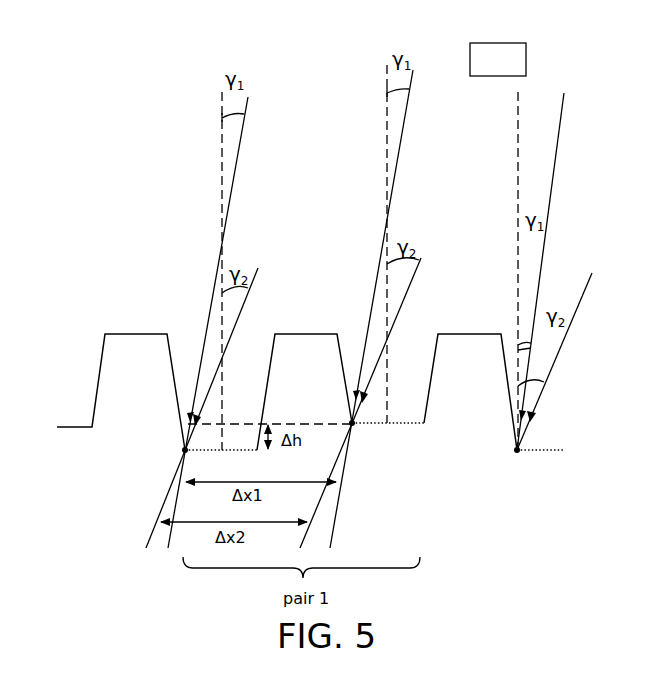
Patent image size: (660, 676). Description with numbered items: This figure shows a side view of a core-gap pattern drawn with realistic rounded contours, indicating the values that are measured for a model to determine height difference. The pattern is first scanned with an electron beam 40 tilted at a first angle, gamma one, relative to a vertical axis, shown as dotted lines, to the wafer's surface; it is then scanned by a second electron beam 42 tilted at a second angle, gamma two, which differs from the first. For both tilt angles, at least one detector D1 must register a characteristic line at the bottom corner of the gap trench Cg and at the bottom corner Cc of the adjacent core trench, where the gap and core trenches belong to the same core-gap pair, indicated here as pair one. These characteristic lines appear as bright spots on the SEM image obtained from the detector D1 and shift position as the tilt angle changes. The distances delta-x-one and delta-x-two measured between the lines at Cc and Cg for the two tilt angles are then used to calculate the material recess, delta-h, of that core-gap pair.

The electron beam 40 is at (240, 157).
The electron beam 42 is at (243, 312).
The detector D1 is at (498, 59).
The bottom corner of gap trench Cg is at (170, 450).
The bottom corner of core trench Cc is at (338, 414).